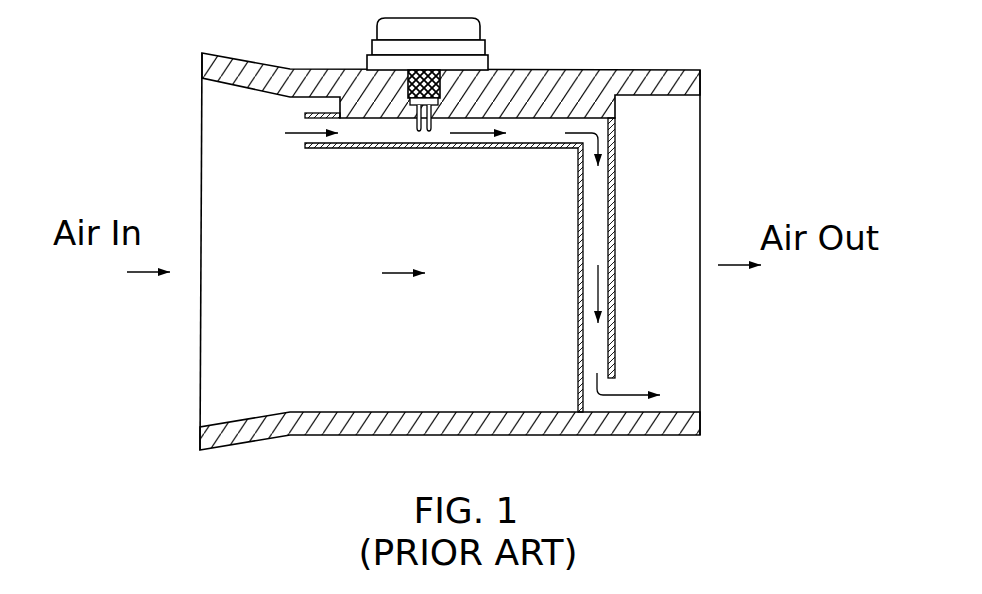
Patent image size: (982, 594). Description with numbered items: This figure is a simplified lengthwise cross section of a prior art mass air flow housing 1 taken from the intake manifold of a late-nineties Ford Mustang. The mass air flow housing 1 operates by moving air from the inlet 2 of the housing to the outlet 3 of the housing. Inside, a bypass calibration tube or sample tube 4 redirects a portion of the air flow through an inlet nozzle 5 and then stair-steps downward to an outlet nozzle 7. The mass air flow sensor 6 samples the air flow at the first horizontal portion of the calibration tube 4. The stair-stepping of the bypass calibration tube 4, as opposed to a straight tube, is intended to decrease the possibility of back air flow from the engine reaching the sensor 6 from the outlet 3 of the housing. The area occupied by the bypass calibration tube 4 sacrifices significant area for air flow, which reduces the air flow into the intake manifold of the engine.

The mass air flow housing 1 is at (623, 70).
The inlet 2 is at (200, 335).
The outlet 3 is at (700, 143).
The bypass calibration tube 4 is at (343, 148).
The inlet nozzle 5 is at (305, 115).
The mass air flow sensor 6 is at (415, 125).
The outlet nozzle 7 is at (615, 368).